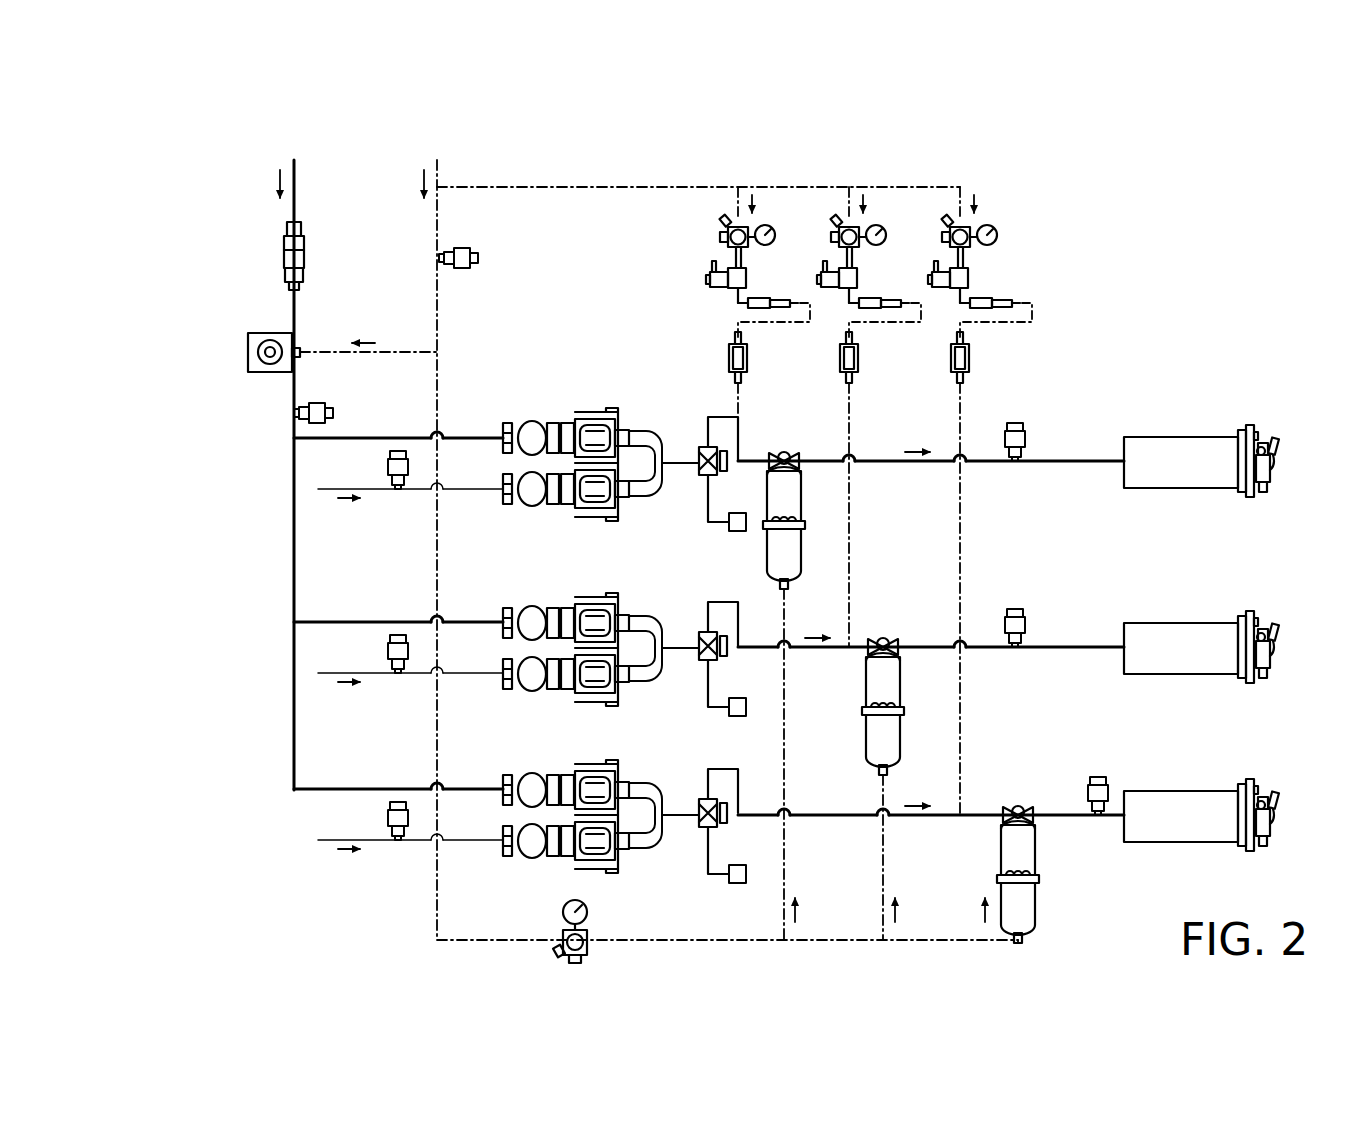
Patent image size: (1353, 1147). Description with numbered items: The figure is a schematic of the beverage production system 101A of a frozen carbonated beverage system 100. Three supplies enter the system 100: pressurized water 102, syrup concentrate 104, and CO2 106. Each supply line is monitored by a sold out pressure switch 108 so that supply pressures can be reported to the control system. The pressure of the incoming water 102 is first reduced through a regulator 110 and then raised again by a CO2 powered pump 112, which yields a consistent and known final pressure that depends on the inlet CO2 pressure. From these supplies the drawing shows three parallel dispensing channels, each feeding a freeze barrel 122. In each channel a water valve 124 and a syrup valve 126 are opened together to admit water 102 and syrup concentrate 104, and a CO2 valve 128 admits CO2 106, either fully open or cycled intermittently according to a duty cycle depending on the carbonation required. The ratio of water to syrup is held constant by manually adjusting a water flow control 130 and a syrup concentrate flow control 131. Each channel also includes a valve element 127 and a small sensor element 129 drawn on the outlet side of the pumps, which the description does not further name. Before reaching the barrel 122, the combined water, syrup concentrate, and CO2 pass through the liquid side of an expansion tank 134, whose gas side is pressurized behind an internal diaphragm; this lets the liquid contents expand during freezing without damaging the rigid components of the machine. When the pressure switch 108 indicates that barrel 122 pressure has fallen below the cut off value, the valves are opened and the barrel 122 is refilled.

The system 100 is at (140, 170).
The beverage production system 101A is at (1190, 178).
The pressurized water 102 is at (290, 152).
The syrup concentrate 104 is at (316, 482).
The CO2 106 is at (433, 152).
The pressure switch 108 is at (480, 258).
The regulator 110 is at (280, 250).
The CO2 powered pump 112 is at (242, 348).
The barrel 122 is at (1205, 366).
The water valve 124 is at (571, 607).
The syrup valve 126 is at (594, 530).
The check valve 127 is at (697, 450).
The CO2 valve 128 is at (716, 250).
The pressure sensor 129 is at (738, 533).
The water flow control 130 is at (532, 416).
The syrup concentrate flow control 131 is at (532, 512).
The expansion tank 134 is at (812, 492).